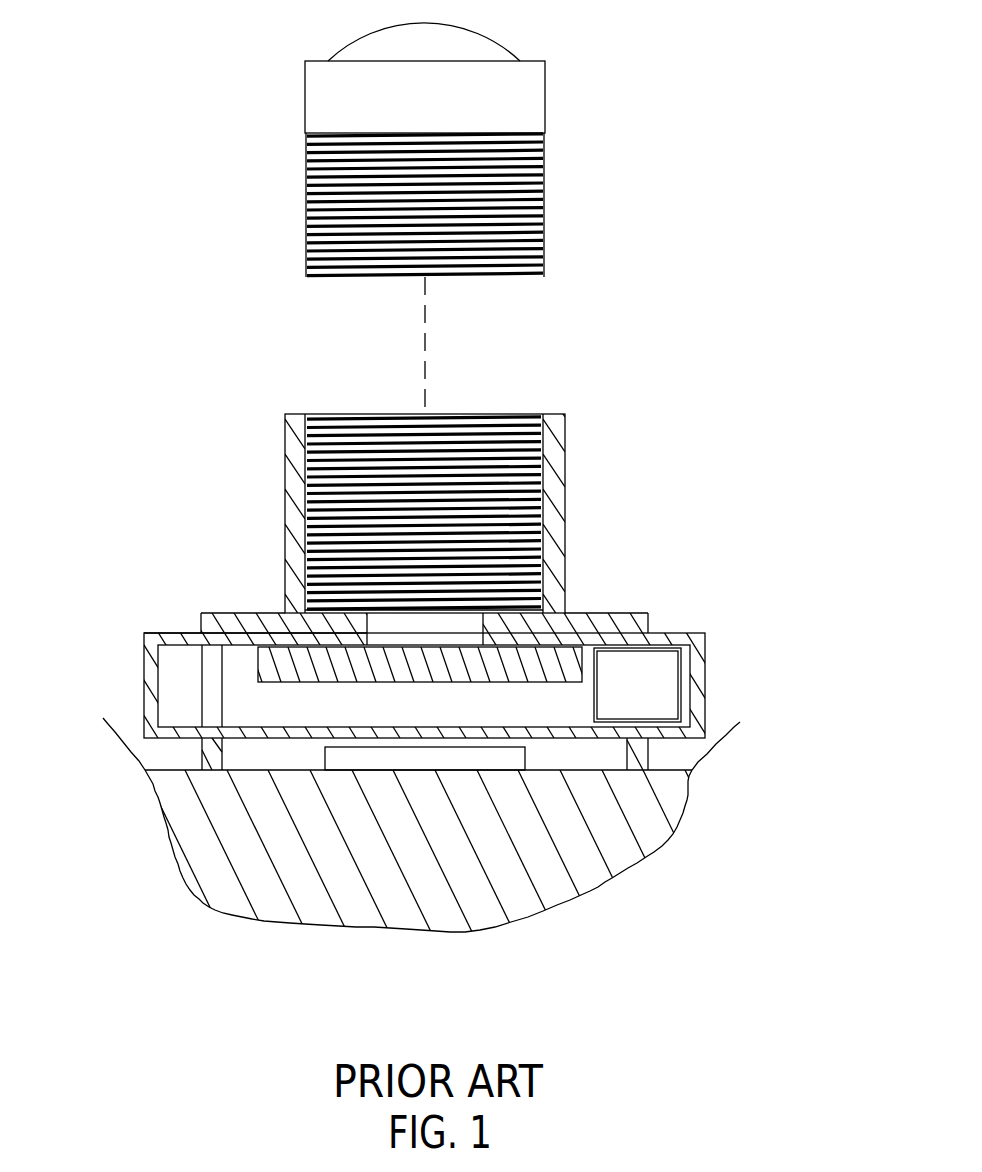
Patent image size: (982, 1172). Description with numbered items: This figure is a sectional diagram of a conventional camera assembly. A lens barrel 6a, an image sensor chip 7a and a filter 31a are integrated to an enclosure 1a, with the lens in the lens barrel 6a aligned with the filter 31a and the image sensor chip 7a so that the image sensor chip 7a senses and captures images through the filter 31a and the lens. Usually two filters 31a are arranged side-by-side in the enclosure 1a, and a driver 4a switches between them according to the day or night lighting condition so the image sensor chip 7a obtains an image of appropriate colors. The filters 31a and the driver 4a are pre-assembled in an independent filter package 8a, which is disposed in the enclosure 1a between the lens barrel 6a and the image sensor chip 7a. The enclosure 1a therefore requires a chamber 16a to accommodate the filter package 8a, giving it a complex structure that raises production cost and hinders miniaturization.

The lens barrel 6a is at (636, 124).
The enclosure 1a is at (645, 625).
The filter package 8a is at (707, 665).
The chamber 16a is at (157, 634).
The filter 31a is at (547, 659).
The driver 4a is at (652, 697).
The image sensor chip 7a is at (455, 762).